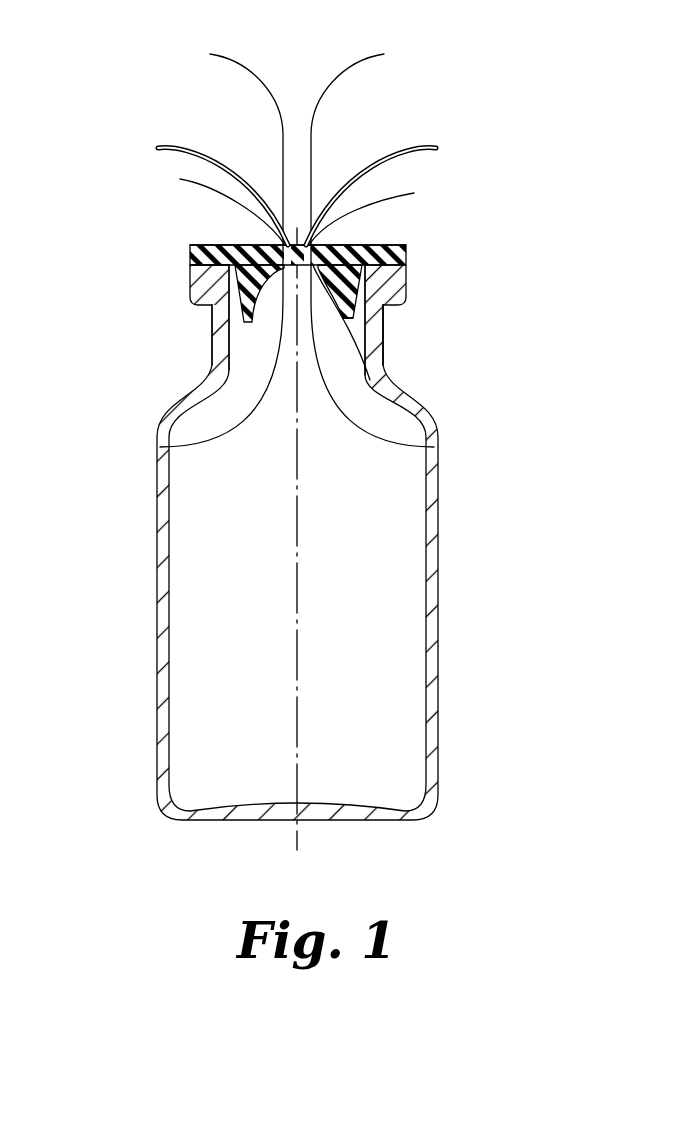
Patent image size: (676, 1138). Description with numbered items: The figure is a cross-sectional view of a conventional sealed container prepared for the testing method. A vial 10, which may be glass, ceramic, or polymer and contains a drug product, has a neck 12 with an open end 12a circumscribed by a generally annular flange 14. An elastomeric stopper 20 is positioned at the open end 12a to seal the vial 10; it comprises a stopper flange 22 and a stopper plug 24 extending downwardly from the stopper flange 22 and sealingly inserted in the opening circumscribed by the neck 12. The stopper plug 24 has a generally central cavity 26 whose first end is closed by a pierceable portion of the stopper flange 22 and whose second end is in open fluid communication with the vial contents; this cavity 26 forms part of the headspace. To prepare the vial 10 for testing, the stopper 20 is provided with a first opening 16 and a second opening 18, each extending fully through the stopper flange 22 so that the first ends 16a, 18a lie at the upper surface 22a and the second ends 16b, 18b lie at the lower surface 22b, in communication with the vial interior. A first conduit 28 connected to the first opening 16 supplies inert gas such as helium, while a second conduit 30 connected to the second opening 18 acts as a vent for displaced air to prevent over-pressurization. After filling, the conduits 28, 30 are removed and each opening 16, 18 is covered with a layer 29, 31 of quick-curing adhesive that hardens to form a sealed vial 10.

The vial 10 is at (432, 613).
The neck 12 is at (214, 342).
The open end 12a is at (190, 265).
The flange 14 is at (200, 285).
The first opening 16 is at (280, 247).
The first end of first opening 16a is at (210, 54).
The second end of first opening 16b is at (160, 447).
The second opening 18 is at (335, 250).
The first end of second opening 18a is at (384, 54).
The second end of second opening 18b is at (434, 447).
The stopper 20 is at (357, 311).
The stopper flange 22 is at (407, 247).
The upper surface of stopper flange 22a is at (232, 252).
The lower surface of stopper flange 22b is at (372, 340).
The stopper plug 24 is at (373, 277).
The cavity 26 is at (370, 364).
The first conduit 28 is at (198, 146).
The adhesive layer 29 is at (180, 179).
The second conduit 30 is at (396, 146).
The adhesive layer 31 is at (410, 194).